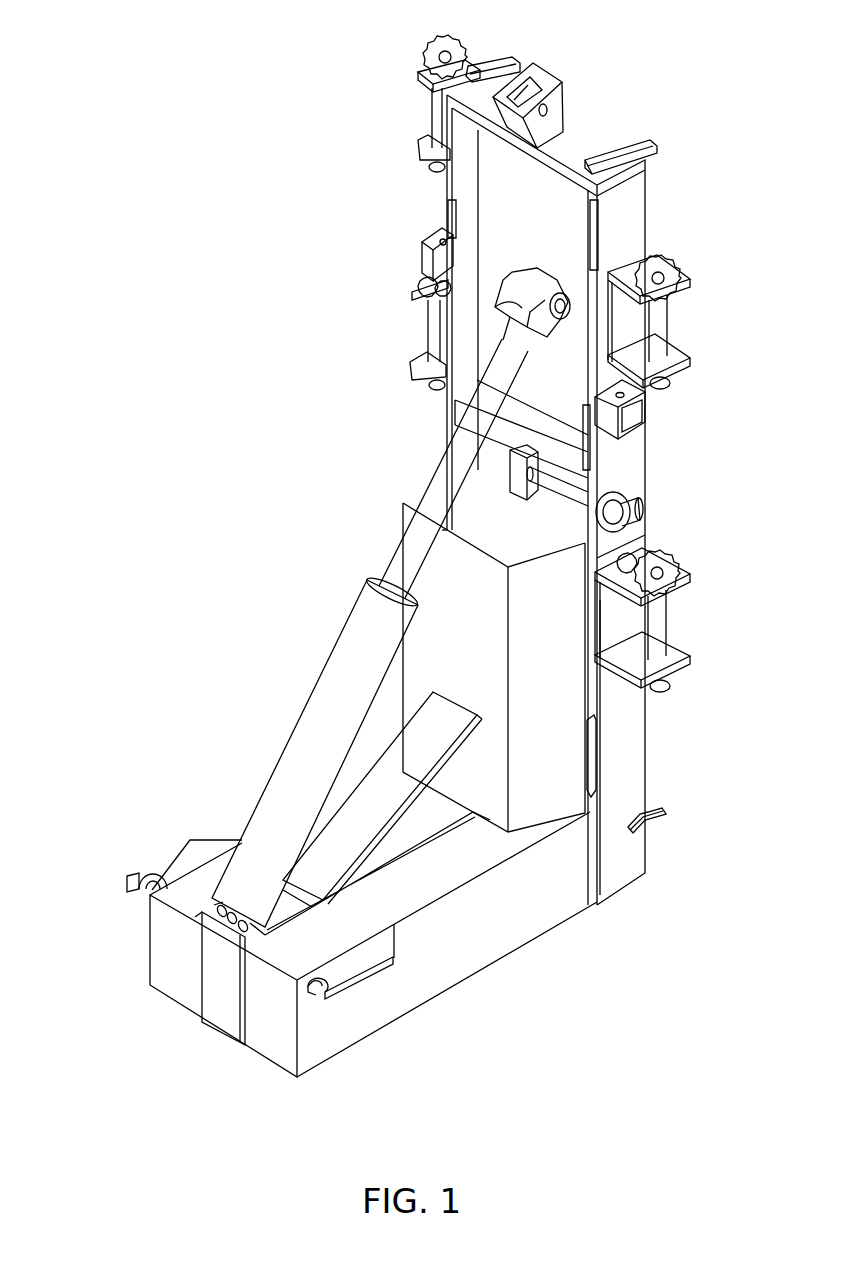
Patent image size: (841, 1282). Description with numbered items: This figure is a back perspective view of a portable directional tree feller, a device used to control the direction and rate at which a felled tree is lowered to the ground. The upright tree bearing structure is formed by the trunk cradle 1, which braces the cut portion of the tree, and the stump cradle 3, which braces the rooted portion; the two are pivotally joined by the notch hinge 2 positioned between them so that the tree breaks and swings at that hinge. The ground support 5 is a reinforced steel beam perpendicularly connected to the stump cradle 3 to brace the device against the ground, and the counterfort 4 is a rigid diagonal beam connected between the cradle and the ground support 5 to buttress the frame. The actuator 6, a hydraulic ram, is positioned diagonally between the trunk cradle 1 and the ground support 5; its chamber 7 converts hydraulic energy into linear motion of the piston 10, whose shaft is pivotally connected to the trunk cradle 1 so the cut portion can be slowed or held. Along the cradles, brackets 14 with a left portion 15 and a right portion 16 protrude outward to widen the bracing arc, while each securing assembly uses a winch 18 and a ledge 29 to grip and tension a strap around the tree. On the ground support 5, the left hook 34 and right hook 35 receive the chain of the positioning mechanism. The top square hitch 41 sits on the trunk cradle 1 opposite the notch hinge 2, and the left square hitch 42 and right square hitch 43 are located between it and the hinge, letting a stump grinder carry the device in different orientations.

The trunk cradle 1 is at (648, 245).
The notch hinge 2 is at (633, 497).
The stump cradle 3 is at (650, 770).
The counterfort 4 is at (445, 715).
The ground support 5 is at (468, 987).
The actuator 6 is at (348, 580).
The chamber 7 is at (300, 740).
The piston 10 is at (447, 487).
The brackets 14 is at (525, 65).
The left portion 15 is at (510, 60).
The right portion 16 is at (628, 148).
The winch 18 is at (433, 110).
The ledge 29 is at (450, 222).
The left hook 34 is at (167, 870).
The right hook 35 is at (347, 970).
The top square hitch 41 is at (553, 105).
The left square hitch 42 is at (428, 262).
The right square hitch 43 is at (607, 424).